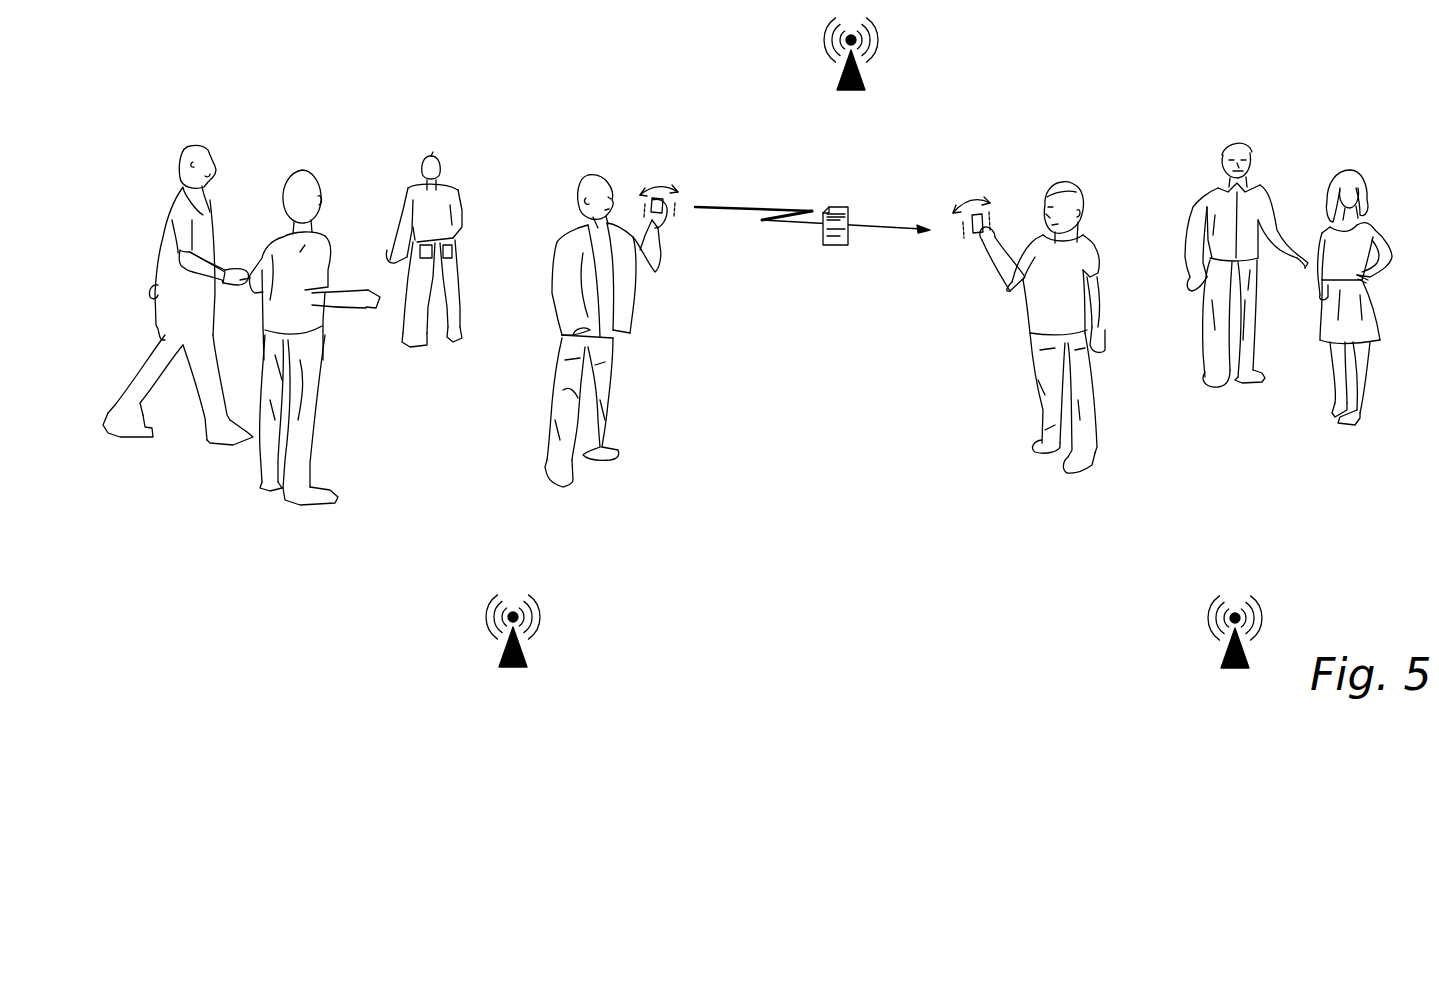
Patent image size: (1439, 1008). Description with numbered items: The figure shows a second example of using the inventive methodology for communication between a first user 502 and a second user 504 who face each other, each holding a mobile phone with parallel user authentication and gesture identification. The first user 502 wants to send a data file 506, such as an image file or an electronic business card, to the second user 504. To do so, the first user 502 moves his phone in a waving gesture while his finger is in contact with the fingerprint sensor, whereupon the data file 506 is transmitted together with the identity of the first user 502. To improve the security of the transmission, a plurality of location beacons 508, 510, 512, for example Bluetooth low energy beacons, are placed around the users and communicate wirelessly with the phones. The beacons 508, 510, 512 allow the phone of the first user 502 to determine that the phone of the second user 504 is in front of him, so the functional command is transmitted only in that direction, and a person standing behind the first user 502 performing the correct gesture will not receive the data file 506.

The first user 502 is at (633, 322).
The second user 504 is at (1027, 313).
The data file 506 is at (838, 245).
The location beacon 508 is at (526, 657).
The location beacon 510 is at (1222, 659).
The location beacon 512 is at (863, 82).